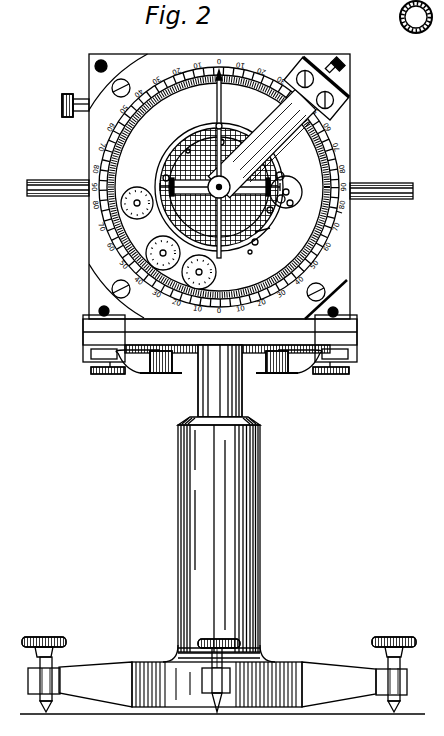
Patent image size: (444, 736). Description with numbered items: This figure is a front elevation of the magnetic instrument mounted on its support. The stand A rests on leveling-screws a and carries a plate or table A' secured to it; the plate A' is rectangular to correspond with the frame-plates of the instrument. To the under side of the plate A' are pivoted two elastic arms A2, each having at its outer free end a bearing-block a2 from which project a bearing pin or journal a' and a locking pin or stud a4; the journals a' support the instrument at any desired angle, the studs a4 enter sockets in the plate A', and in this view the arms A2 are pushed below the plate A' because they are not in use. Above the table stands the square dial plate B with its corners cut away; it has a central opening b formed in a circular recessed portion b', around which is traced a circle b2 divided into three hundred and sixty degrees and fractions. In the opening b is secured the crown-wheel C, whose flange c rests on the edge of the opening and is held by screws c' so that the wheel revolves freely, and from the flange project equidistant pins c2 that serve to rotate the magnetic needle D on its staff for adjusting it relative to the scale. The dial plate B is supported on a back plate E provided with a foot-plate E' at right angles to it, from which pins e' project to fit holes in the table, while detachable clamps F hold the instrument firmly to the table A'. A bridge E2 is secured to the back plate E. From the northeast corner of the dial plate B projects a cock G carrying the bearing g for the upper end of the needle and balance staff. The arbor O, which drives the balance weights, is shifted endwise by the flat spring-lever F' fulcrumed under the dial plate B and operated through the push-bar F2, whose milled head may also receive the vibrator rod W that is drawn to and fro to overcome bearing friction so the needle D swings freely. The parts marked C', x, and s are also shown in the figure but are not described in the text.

The stand A is at (219, 503).
The plate or table A' is at (179, 339).
The pivoted arms A2 is at (138, 372).
The leveling-screws a is at (219, 664).
The bearing pins or journals a' is at (219, 374).
The bearing-blocks a2 is at (157, 375).
The locking pins or studs a4 is at (178, 376).
The dial plate B is at (269, 62).
The central opening b is at (284, 217).
The circular recessed portion b' is at (270, 250).
The graduated circle b2 is at (342, 213).
The crown-wheel C is at (214, 187).
The right shaft C' is at (381, 180).
The arbor O is at (58, 179).
The flange c is at (220, 155).
The screws c' is at (189, 146).
The pins c2 is at (190, 140).
The magnetic needle D is at (223, 99).
The back plate E is at (230, 177).
The foot-plate E' is at (235, 330).
The bridge E2 is at (255, 232).
The pins e' is at (330, 37).
The detachable clamps F is at (88, 337).
The shifting spring-lever F' is at (344, 344).
The push-bar F2 is at (62, 106).
The cock G is at (262, 143).
The bearing g is at (227, 178).
The vibrator rod W is at (134, 198).
The pin x is at (284, 169).
The spring s is at (287, 189).